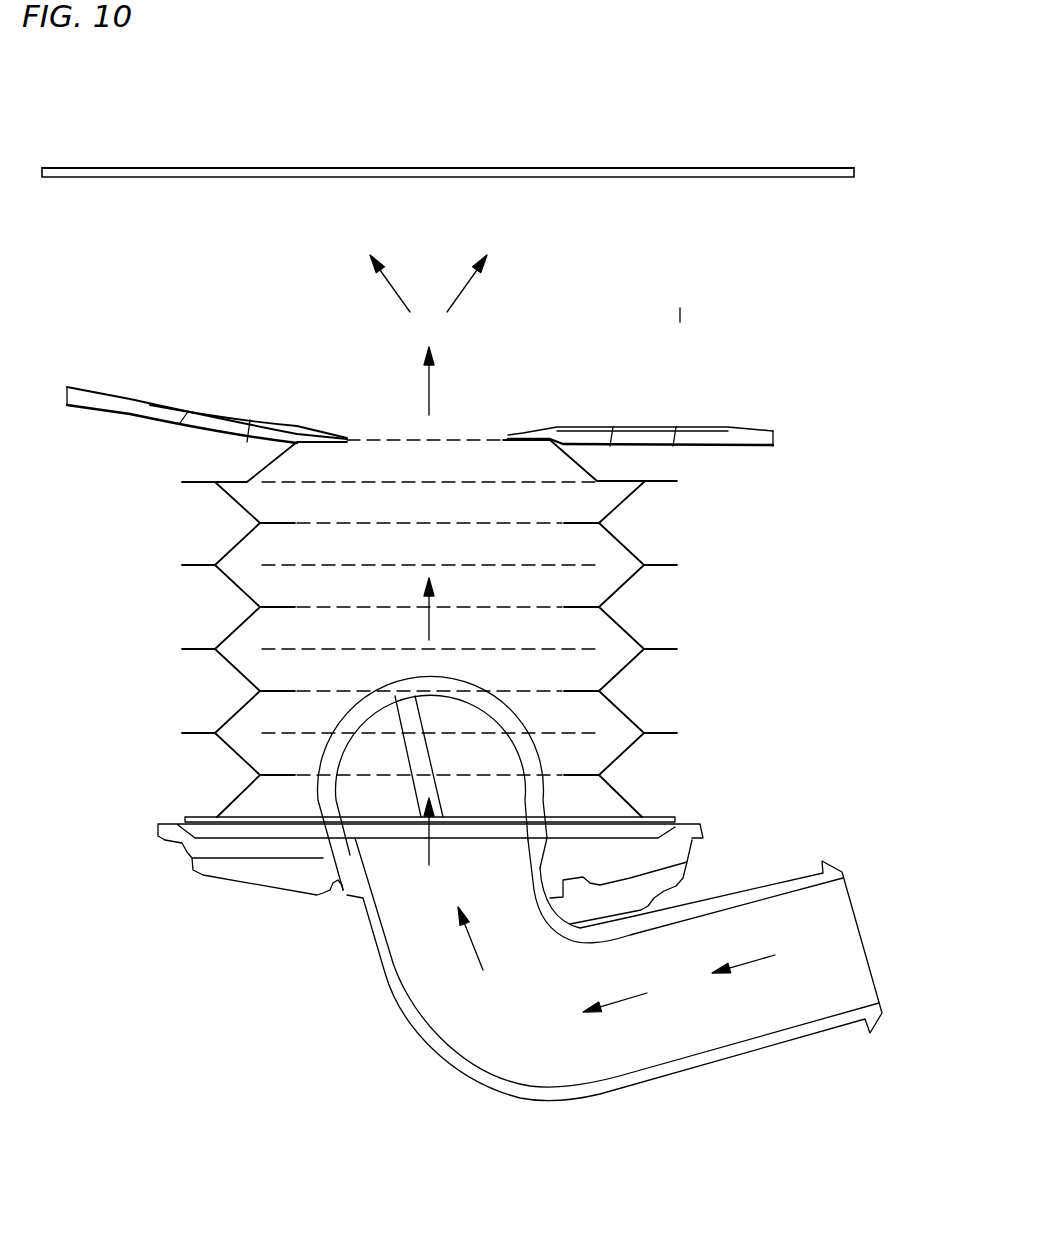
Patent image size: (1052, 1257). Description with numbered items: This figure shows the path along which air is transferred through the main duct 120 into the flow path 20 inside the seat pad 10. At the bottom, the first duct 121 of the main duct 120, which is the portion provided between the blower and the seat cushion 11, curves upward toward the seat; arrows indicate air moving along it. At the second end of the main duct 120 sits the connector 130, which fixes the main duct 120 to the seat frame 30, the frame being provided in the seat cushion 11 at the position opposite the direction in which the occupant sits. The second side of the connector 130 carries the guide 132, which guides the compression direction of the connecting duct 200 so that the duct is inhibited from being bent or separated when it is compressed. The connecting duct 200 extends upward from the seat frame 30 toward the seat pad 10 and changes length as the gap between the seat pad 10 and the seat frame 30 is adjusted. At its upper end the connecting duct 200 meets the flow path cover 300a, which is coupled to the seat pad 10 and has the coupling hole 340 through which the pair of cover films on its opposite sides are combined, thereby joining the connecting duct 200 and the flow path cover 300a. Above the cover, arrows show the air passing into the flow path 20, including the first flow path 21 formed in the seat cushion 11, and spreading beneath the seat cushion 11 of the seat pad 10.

The seat pad 10 is at (448, 120).
The seat cushion 11 is at (657, 168).
The flow path 20 is at (627, 335).
The first flow path 21 is at (680, 316).
The flow path cover 300a is at (775, 438).
The coupling hole 340 is at (670, 447).
The connecting duct 200 is at (718, 656).
The guide 132 is at (525, 760).
The seat frame 30 is at (158, 829).
The connector 130 is at (270, 873).
The main duct 120 is at (614, 1001).
The first duct 121 is at (713, 1055).